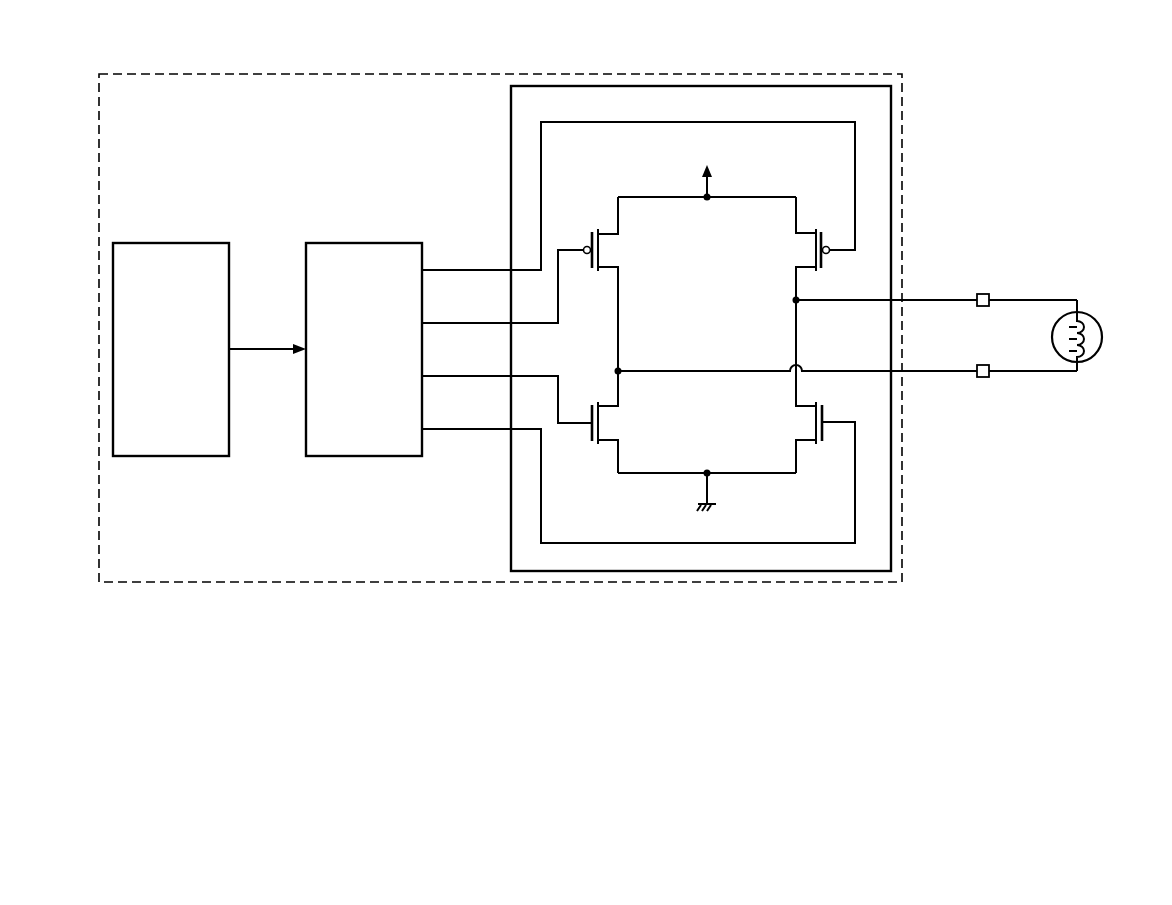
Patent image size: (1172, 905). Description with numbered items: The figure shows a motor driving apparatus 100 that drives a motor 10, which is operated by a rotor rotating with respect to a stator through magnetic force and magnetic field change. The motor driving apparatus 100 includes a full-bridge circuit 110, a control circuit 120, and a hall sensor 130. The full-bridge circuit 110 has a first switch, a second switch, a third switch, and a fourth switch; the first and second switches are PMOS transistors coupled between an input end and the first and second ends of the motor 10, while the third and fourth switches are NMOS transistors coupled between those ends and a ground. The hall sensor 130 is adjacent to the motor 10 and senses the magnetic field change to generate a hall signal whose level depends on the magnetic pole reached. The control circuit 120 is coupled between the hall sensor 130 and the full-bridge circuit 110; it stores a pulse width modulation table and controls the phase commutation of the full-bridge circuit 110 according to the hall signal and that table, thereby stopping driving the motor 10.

The motor driving apparatus 100 is at (377, 73).
The full-bridge circuit 110 is at (511, 150).
The control circuit 120 is at (363, 243).
The hall sensor 130 is at (171, 243).
The motor 10 is at (1096, 316).